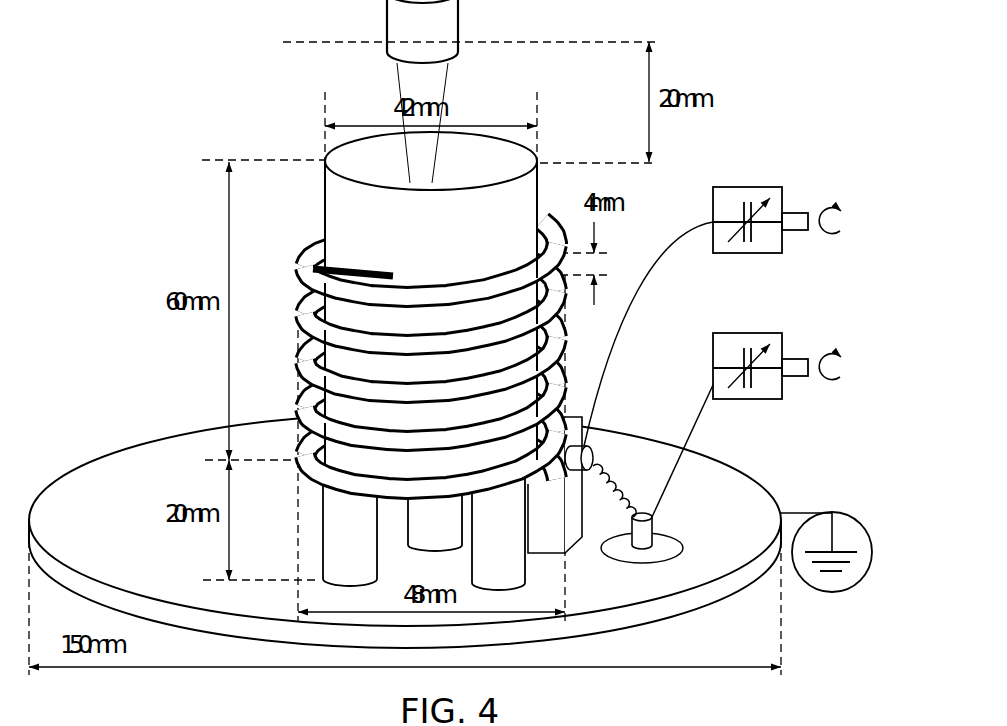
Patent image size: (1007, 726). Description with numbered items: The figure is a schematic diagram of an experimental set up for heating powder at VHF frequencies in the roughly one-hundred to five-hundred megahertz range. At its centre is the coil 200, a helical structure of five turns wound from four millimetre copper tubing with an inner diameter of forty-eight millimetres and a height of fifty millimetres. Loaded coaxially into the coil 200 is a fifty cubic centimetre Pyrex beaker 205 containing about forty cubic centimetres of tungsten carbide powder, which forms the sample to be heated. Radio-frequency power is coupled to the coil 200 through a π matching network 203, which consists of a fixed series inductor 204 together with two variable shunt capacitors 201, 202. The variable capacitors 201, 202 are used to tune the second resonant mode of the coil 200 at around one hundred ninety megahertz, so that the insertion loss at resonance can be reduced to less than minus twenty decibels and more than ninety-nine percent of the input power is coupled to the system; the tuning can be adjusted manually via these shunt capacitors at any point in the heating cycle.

The coil 200 is at (351, 342).
The variable shunt capacitor 201 is at (762, 188).
The variable shunt capacitor 202 is at (765, 330).
The π matching network 203 is at (772, 428).
The fixed series inductor 204 is at (622, 460).
The Pyrex beaker 205 is at (350, 218).